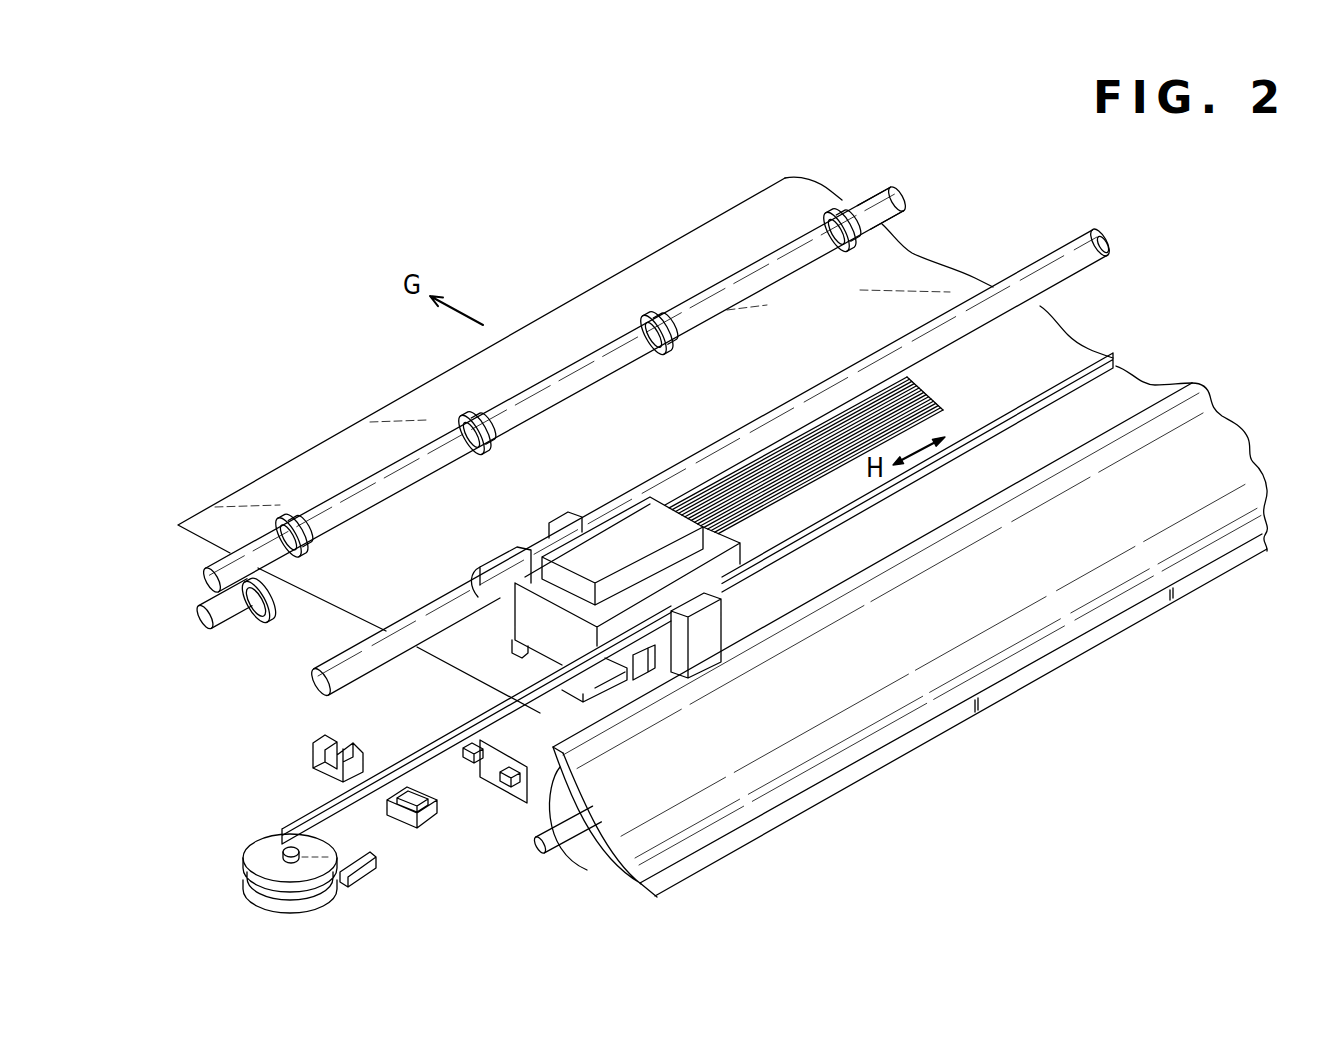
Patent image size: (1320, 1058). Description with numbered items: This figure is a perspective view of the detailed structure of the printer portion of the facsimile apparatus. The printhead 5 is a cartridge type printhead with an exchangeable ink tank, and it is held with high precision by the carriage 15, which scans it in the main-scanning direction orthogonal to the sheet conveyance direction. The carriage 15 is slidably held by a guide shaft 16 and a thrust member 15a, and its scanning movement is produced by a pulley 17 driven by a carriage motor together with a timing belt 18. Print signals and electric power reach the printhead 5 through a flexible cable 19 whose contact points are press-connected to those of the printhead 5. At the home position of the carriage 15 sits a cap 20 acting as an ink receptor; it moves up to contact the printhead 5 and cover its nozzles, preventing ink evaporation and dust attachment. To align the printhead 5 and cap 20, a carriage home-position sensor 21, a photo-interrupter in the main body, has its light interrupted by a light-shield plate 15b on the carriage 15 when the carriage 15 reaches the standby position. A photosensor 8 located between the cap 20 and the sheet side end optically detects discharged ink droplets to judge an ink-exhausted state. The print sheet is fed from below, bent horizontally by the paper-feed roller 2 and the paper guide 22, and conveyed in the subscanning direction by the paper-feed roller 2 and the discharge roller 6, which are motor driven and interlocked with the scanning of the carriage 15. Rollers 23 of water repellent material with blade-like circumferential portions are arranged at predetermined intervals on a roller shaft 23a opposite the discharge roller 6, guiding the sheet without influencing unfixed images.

The paper-feed roller 2 is at (596, 858).
The printhead 5 is at (626, 527).
The discharge roller 6 is at (280, 594).
The photosensor 8 is at (508, 782).
The carriage 15 is at (732, 541).
The thrust member 15a is at (712, 655).
The light-shield plate 15b is at (523, 653).
The guide shaft 16 is at (1050, 255).
The pulley 17 is at (272, 846).
The timing belt 18 is at (874, 503).
The flexible cable 19 is at (928, 394).
The cap 20 is at (428, 828).
The carriage home-position sensor 21 is at (312, 753).
The paper guide 22 is at (838, 748).
The rollers 23 is at (494, 447).
The roller shaft 23a is at (900, 192).